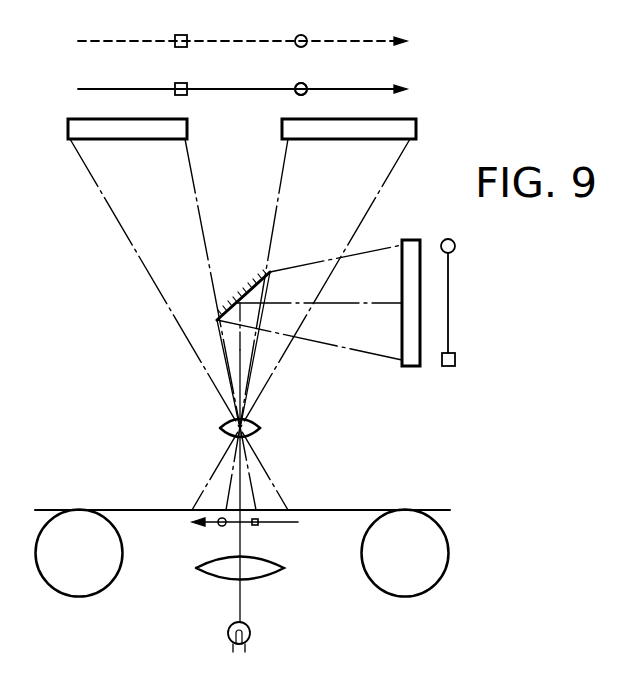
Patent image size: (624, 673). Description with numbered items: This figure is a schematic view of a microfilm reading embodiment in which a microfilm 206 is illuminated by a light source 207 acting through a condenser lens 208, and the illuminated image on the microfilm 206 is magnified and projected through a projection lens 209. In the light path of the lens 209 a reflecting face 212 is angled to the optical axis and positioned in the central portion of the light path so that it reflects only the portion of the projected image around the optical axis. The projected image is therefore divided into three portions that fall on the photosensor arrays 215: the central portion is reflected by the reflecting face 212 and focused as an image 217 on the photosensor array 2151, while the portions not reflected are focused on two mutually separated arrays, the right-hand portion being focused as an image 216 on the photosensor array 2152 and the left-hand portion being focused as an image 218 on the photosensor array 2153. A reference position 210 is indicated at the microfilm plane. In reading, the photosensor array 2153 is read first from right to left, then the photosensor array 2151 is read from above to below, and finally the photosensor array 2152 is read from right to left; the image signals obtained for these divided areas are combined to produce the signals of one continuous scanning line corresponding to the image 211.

The microfilm 206 is at (155, 511).
The light source 207 is at (228, 634).
The condenser lens 208 is at (203, 569).
The projection lens 209 is at (261, 425).
The image plane indicator 210 is at (270, 523).
The image 211 is at (113, 41).
The reflecting face 212 is at (253, 280).
The photosensor arrays 215 is at (270, 263).
The photosensor array 2151 is at (410, 367).
The photosensor array 2152 is at (126, 140).
The photosensor array 2153 is at (341, 140).
The image 216 is at (100, 89).
The image 217 is at (452, 305).
The image 218 is at (373, 89).